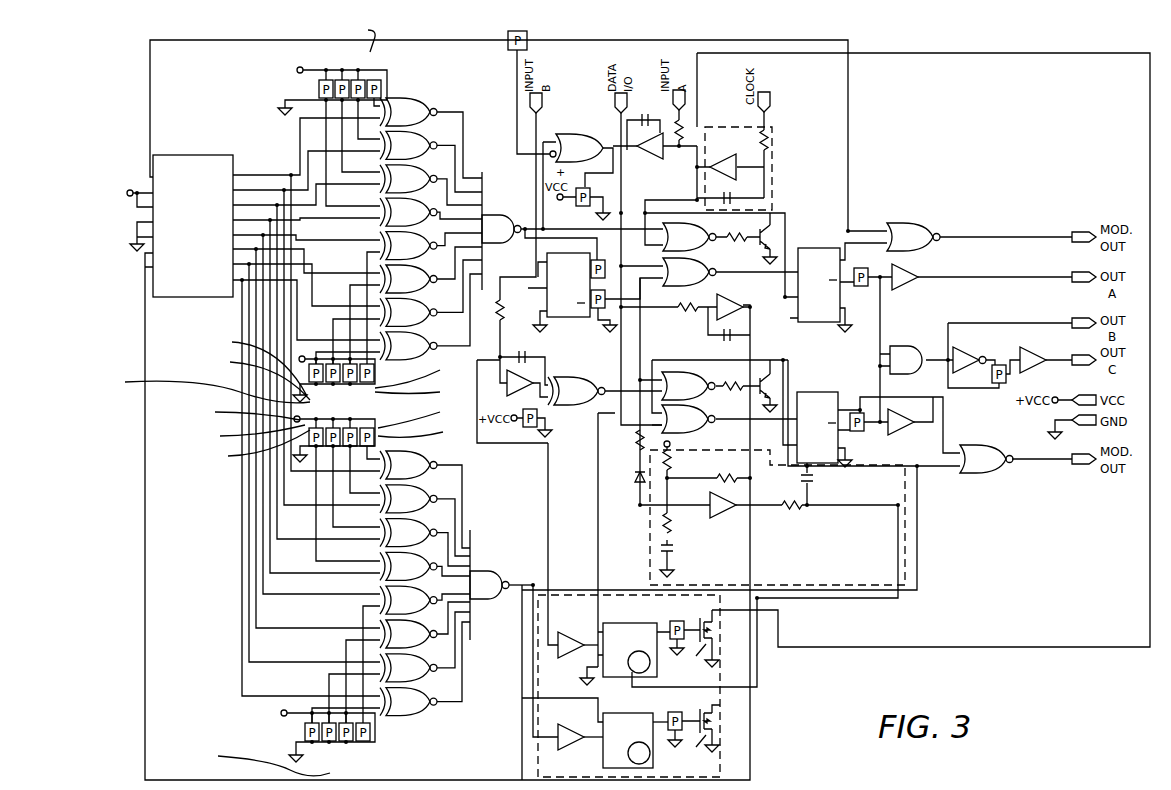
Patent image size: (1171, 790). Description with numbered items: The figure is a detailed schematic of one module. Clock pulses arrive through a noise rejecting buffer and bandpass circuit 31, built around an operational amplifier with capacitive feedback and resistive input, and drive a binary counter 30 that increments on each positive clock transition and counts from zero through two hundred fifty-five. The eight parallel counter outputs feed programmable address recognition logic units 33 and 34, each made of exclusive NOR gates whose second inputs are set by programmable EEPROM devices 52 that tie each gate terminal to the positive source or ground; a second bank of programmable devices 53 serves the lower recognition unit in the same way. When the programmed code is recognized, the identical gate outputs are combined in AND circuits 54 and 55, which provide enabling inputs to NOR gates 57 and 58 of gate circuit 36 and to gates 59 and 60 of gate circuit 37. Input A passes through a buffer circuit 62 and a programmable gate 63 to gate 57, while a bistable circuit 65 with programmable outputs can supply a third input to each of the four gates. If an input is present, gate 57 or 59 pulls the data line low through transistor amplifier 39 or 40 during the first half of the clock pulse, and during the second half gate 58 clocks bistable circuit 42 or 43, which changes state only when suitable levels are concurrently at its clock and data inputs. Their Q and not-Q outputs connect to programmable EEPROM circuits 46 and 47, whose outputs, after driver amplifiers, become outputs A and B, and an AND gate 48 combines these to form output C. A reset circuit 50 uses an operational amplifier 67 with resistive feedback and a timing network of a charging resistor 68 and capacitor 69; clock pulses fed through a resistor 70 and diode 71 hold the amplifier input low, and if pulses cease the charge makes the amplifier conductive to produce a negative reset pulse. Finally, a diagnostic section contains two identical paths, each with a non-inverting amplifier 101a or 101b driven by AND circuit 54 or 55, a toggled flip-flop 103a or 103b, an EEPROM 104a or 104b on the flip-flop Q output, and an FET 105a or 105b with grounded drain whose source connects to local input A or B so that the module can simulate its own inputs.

The counter 30 is at (190, 297).
The buffer and bandpass circuit 31 is at (770, 138).
The programmable address recognition logic unit 33 is at (420, 97).
The programmable address recognition logic unit 34 is at (395, 713).
The gate circuit 36 is at (730, 267).
The gate circuit 37 is at (695, 416).
The amplifier 39 is at (778, 222).
The amplifier 40 is at (788, 377).
The bistable flip-flop circuit 42 is at (820, 248).
The bistable flip-flop circuit 43 is at (826, 392).
The programmable EEPROM circuit 46 is at (865, 287).
The programmable EEPROM circuit 47 is at (870, 432).
The AND gate 48 is at (912, 345).
The reset circuit 50 is at (650, 535).
The programmable EEPROM devices 52 is at (318, 89).
The address selection jumpers B 53 is at (383, 437).
The AND circuit 54 is at (502, 215).
The AND circuit 55 is at (494, 570).
The NOR gate 57 is at (706, 233).
The NOR gate 58 is at (719, 312).
The gate 59 is at (677, 383).
The gate 60 is at (700, 430).
The buffer circuit 62 is at (645, 166).
The programmable gate 63 is at (580, 134).
The bistable circuit 65 is at (545, 282).
The operational amplifier 67 is at (740, 515).
The resistor 68 is at (675, 530).
The capacitor 69 is at (676, 551).
The resistor 70 is at (636, 450).
The diode 71 is at (632, 479).
The non-inverting amplifier 101a is at (575, 627).
The non-inverting amplifier 101b is at (580, 728).
The toggled flip-flop circuit 103a is at (614, 623).
The toggled flip-flop circuit 103b is at (603, 760).
The EEPROM 104a is at (672, 621).
The EEPROM 104b is at (712, 705).
The FET 105a is at (692, 648).
The FET 105b is at (705, 742).